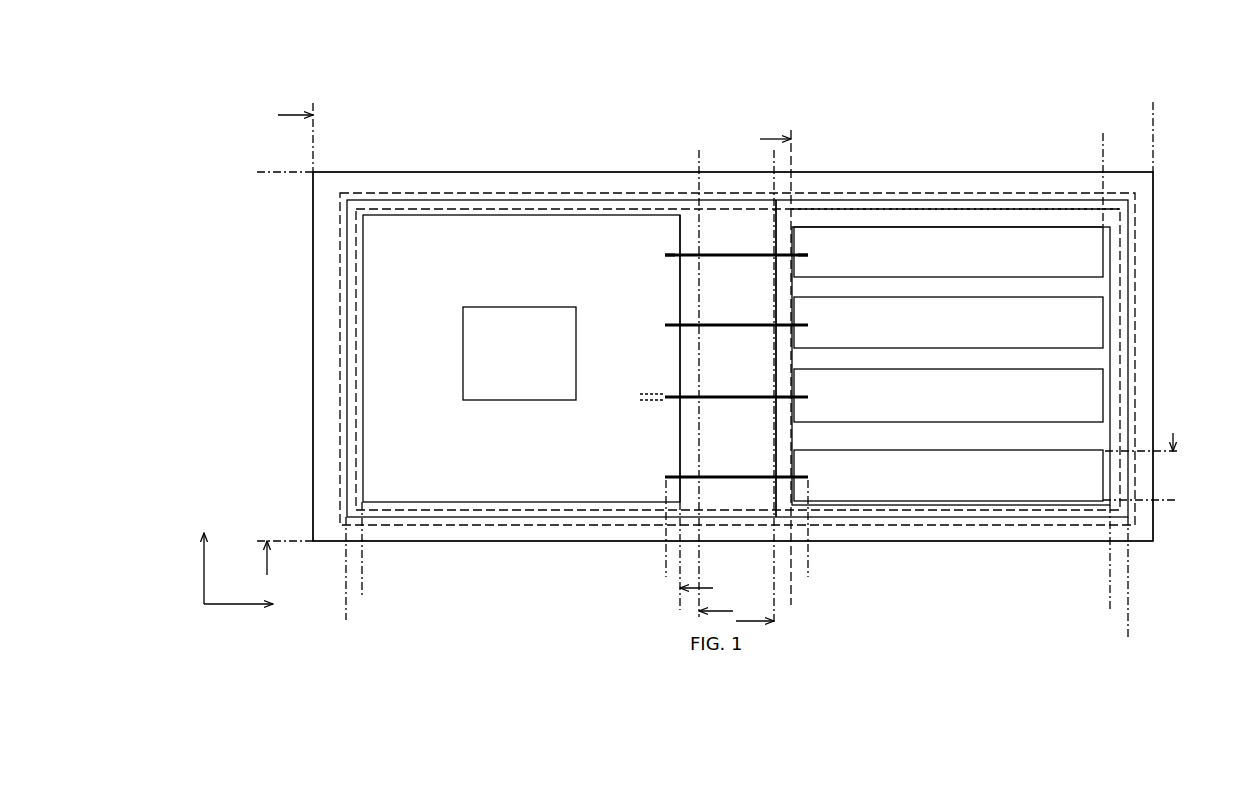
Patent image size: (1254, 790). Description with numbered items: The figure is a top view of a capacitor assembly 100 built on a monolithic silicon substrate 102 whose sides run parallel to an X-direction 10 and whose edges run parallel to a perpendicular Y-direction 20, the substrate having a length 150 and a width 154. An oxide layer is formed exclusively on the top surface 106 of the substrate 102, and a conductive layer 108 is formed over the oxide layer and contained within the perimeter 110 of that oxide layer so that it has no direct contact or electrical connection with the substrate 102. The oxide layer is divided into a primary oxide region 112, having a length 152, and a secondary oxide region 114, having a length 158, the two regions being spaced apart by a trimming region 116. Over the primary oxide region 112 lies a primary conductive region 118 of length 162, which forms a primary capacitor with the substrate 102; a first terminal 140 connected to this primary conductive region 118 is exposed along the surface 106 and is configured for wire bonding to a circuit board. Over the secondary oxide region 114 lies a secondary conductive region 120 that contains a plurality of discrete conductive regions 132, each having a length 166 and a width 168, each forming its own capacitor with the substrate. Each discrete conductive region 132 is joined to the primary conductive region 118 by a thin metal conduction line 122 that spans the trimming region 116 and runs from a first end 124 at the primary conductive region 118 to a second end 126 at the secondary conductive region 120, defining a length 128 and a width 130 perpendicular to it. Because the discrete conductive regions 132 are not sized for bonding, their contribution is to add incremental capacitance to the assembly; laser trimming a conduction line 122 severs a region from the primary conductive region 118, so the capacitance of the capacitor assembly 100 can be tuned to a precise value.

The capacitor assembly 100 is at (377, 130).
The substrate 102 is at (463, 183).
The surface 106 is at (748, 305).
The conductive layer 108 is at (660, 209).
The perimeter 110 is at (618, 192).
The primary oxide region 112 is at (567, 203).
The secondary oxide region 114 is at (853, 208).
The trimming region 116 is at (774, 163).
The primary conductive region 118 is at (402, 338).
The secondary conductive region 120 is at (1112, 350).
The conduction line 122 is at (733, 253).
The first end 124 is at (665, 258).
The second end 126 is at (813, 258).
The length 128 is at (808, 563).
The width 130 is at (652, 422).
The discrete conductive regions 132 is at (1093, 243).
The first terminal 140 is at (477, 372).
The length of the substrate 150 is at (1153, 112).
The length of the primary oxide region 152 is at (346, 616).
The width of the substrate 154 is at (272, 172).
The length of the secondary oxide region 158 is at (1128, 623).
The length of the primary conductive region 162 is at (362, 586).
The length of the discrete conductive region 166 is at (1138, 142).
The width of the discrete conductive region 168 is at (1173, 503).
The X-direction 10 is at (256, 602).
The Y-direction 20 is at (210, 557).